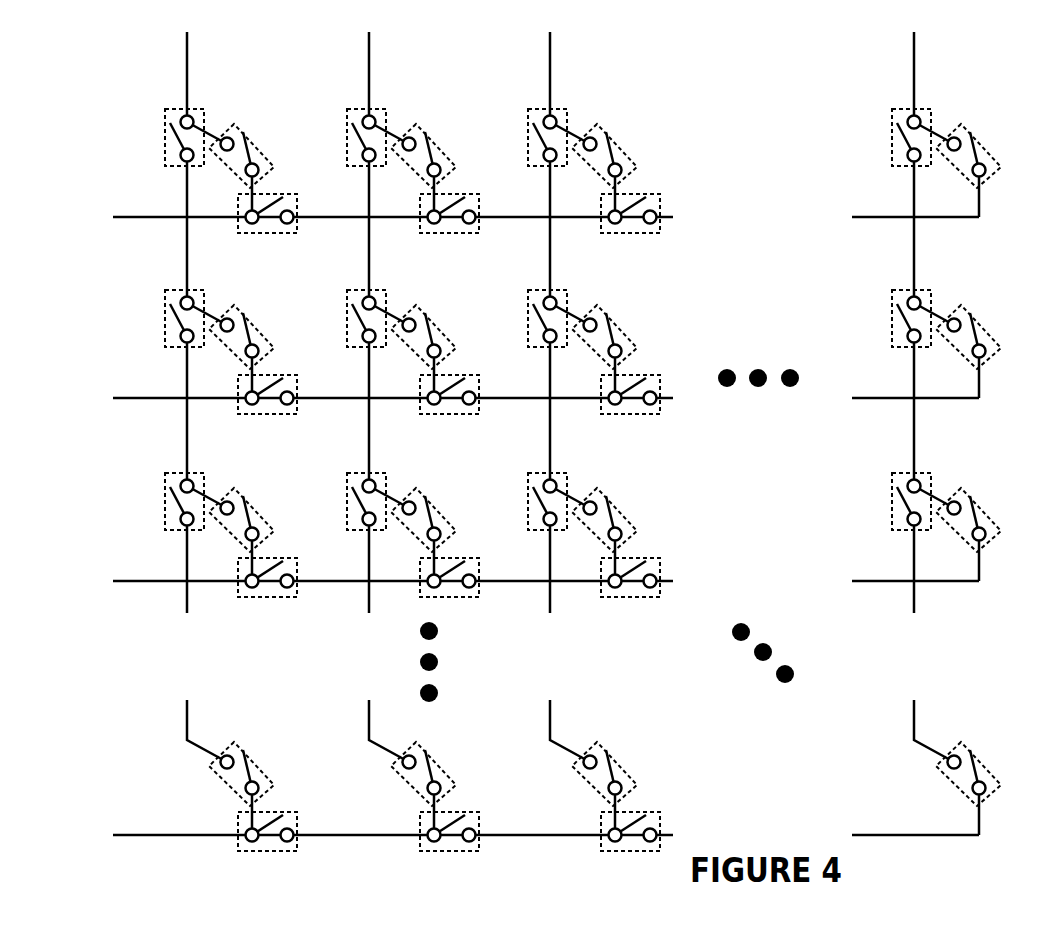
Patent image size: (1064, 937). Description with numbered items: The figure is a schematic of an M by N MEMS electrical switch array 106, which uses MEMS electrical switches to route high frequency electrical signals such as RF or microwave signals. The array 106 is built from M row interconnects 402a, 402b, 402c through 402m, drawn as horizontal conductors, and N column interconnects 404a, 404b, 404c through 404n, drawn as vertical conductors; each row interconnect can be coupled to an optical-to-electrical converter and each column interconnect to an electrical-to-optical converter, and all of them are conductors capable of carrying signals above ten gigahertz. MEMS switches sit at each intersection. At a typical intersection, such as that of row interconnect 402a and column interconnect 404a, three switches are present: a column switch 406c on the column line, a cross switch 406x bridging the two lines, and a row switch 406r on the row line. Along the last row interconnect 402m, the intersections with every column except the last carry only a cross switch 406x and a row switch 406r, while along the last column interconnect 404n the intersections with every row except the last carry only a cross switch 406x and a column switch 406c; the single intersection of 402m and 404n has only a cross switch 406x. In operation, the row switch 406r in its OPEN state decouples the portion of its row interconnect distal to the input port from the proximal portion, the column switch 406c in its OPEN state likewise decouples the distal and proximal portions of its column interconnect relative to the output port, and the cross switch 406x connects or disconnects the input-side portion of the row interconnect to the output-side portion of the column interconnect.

The M×N MEMS electrical switch array 106 is at (673, 69).
The row interconnect 402a is at (138, 215).
The row interconnect 402b is at (138, 396).
The row interconnect 402c is at (138, 579).
The last row interconnect 402m is at (138, 833).
The column interconnect 404a is at (187, 69).
The column interconnect 404b is at (369, 69).
The column interconnect 404c is at (550, 69).
The last column interconnect 404n is at (914, 69).
The column switch 406c is at (581, 307).
The cross switch 406x is at (631, 478).
The row switch 406r is at (471, 512).